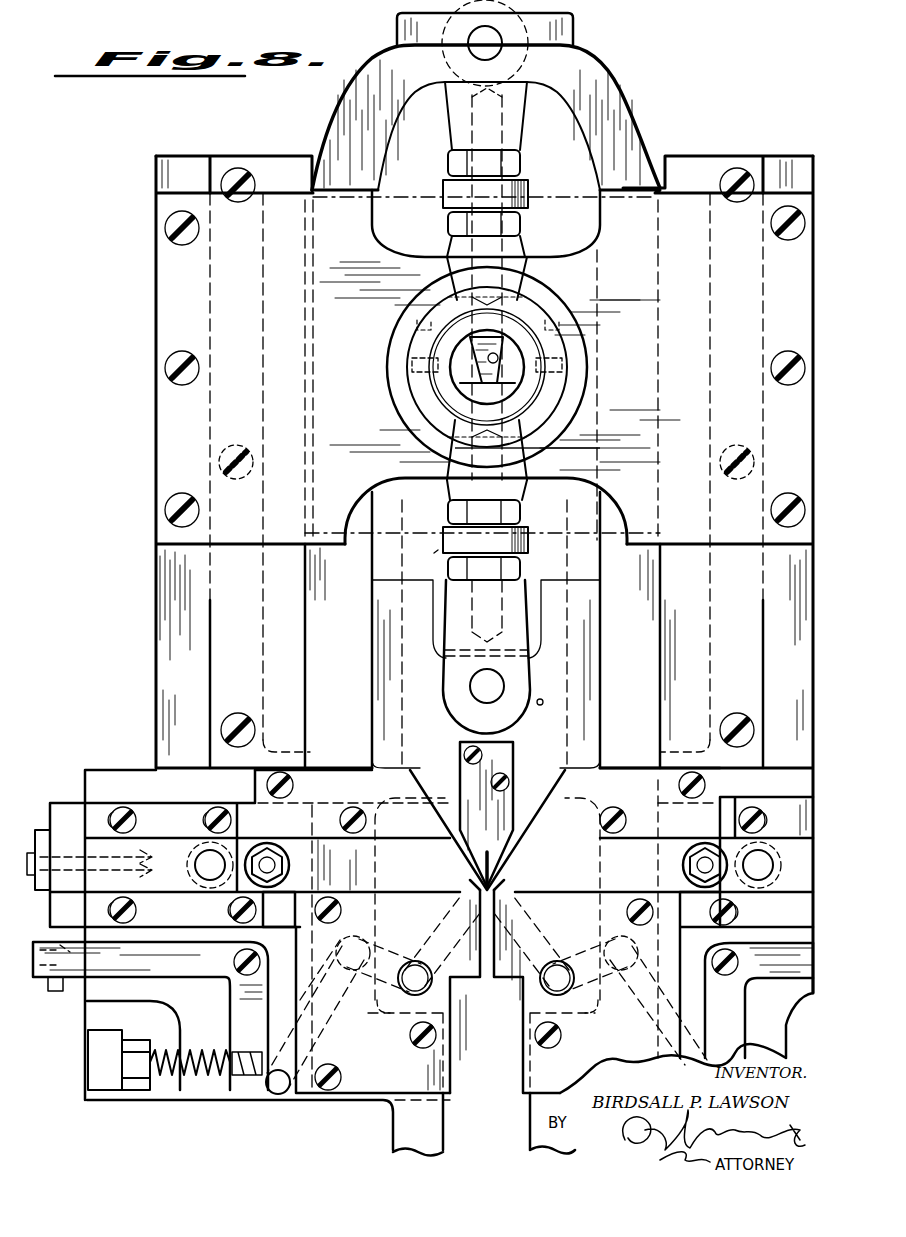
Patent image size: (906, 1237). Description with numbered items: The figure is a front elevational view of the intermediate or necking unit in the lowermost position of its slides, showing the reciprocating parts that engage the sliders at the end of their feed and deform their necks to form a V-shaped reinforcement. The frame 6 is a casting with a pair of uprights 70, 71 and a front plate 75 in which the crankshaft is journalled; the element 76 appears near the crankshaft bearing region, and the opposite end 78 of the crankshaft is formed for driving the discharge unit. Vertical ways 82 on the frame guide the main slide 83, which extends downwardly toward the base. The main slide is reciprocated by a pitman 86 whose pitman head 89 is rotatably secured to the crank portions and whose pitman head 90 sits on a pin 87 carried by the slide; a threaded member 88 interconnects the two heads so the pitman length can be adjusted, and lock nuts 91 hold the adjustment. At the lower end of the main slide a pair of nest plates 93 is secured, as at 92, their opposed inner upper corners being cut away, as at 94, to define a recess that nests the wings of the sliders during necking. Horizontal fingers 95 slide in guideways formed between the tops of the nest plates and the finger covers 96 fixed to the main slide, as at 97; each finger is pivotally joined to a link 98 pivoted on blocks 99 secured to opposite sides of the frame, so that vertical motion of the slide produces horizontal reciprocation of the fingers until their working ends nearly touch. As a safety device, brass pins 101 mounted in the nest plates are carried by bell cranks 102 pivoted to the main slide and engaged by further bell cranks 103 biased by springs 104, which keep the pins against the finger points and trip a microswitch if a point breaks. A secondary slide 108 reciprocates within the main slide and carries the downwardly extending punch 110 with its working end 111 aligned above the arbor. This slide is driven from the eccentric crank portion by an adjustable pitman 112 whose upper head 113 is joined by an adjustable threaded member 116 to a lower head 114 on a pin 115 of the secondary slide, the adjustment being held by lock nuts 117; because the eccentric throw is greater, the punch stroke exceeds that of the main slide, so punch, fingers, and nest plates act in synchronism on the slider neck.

The frame 6 is at (85, 773).
The upright 70 is at (176, 568).
The upright 71 is at (760, 215).
The front plate 75 is at (632, 207).
The wedge key 76 is at (452, 372).
The opposite end of the crankshaft 78 is at (498, 360).
The vertical ways 82 is at (278, 190).
The main slide 83 is at (320, 590).
The pitman 86 is at (530, 165).
The pin 87 is at (500, 43).
The threaded member 88 is at (515, 196).
The pitman head 89 is at (450, 244).
The pitman head 90 is at (512, 108).
The lock nuts 91 is at (455, 220).
The securing means for nest plates 92 is at (645, 912).
The nest plates 93 is at (500, 987).
The cut-away corners 94 is at (474, 898).
The horizontal fingers 95 is at (398, 885).
The finger covers 96 is at (345, 790).
The fastening of finger covers 97 is at (296, 788).
The link 98 is at (212, 880).
The blocks 99 is at (150, 815).
The brass pins 101 is at (450, 930).
The bell cranks 102 is at (282, 1097).
The bell cranks 103 is at (105, 968).
The springs 104 is at (212, 1078).
The secondary slide 108 is at (543, 700).
The punch 110 is at (470, 816).
The working end 111 is at (484, 862).
The adjustable pitman 112 is at (431, 560).
The upper head 113 is at (455, 485).
The lower head 114 is at (512, 672).
The pin 115 is at (470, 688).
The adjustable threaded member 116 is at (446, 538).
The lock nuts 117 is at (517, 568).